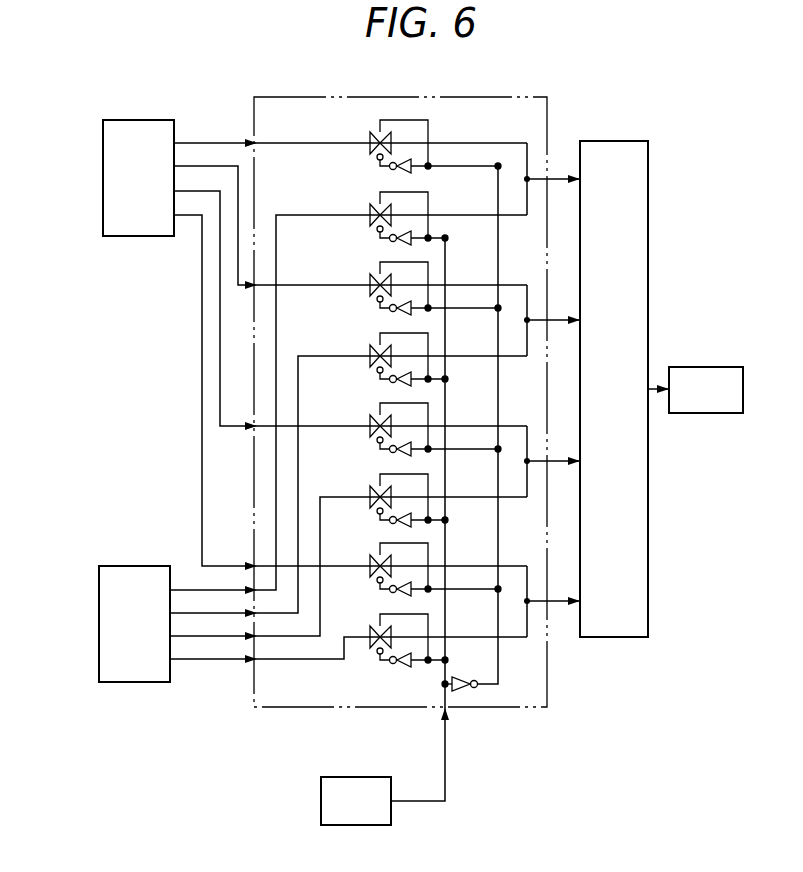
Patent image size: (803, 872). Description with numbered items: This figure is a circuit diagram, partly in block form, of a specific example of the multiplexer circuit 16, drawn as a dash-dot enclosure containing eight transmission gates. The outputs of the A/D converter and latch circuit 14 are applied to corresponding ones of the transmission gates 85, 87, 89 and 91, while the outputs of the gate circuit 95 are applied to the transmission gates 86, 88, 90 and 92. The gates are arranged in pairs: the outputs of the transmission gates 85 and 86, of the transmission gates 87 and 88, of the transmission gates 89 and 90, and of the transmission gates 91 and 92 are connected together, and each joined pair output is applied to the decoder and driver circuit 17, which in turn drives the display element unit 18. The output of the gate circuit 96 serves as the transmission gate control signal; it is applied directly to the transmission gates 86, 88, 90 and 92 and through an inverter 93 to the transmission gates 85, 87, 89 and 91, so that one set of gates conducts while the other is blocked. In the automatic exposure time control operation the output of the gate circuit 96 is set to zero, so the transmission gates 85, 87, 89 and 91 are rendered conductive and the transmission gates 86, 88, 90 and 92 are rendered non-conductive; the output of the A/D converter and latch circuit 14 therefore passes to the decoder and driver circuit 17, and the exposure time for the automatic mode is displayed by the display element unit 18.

The A/D converter and latch circuit 14 is at (130, 120).
The multiplexer circuit 16 is at (330, 97).
The decoder and driver circuit 17 is at (650, 312).
The display element unit 18 is at (692, 367).
The transmission gate 85 is at (368, 141).
The transmission gate 86 is at (368, 213).
The transmission gate 87 is at (368, 283).
The transmission gate 88 is at (368, 354).
The transmission gate 89 is at (368, 424).
The transmission gate 90 is at (368, 495).
The transmission gate 91 is at (368, 564).
The transmission gate 92 is at (368, 635).
The inverter 93 is at (460, 678).
The gate circuit 95 is at (125, 566).
The gate circuit 96 is at (319, 803).